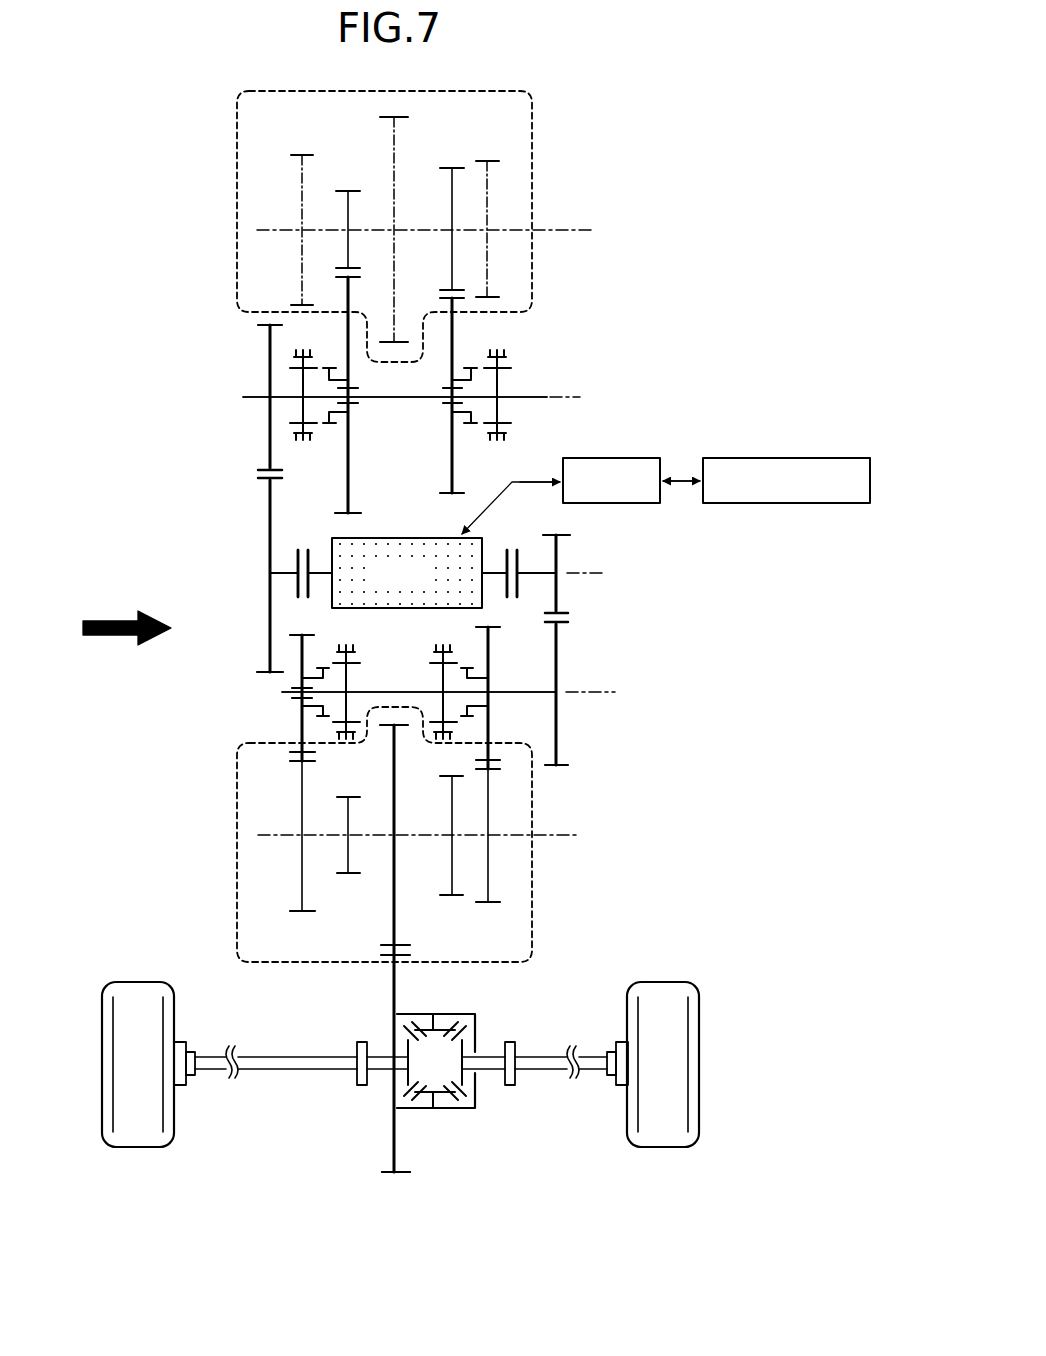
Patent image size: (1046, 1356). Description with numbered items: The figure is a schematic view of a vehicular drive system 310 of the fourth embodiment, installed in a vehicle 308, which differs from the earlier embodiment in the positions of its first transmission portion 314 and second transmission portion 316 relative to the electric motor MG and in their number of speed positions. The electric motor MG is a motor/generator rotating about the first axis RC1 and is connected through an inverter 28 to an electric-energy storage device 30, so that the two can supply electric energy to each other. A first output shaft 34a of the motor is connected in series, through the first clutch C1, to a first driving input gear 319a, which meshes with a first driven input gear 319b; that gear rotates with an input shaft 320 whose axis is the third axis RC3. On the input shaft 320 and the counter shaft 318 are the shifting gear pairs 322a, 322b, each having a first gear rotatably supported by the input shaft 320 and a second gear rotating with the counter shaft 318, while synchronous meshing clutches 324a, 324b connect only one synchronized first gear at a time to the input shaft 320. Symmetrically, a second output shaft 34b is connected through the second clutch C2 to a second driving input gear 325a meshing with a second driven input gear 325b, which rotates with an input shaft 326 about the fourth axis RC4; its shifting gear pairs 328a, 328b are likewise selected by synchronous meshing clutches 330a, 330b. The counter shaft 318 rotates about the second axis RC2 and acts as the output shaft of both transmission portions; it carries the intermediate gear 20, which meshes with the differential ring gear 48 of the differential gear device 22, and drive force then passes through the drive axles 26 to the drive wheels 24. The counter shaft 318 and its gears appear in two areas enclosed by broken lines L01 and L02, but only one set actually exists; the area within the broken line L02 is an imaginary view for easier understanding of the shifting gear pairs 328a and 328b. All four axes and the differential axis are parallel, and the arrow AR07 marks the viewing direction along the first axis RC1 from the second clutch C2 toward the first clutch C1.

The intermediate gear 20 is at (398, 119).
The differential gear device 22 is at (438, 1129).
The drive wheels 24 is at (133, 1138).
The drive axles 26 is at (268, 1068).
The inverter 28 is at (642, 461).
The electric-energy storage device 30 is at (798, 461).
The first output shaft 34a is at (492, 588).
The second output shaft 34b is at (316, 571).
The differential ring gear 48 is at (388, 1176).
The vehicle 308 is at (716, 1246).
The vehicular drive system 310 is at (654, 322).
The first transmission portion 314 is at (607, 650).
The second transmission portion 316 is at (198, 438).
The counter shaft 318 is at (442, 232).
The first driving input gear 319a is at (565, 611).
The first driven input gear 319b is at (565, 624).
The input shaft 320 is at (536, 690).
The shifting gear pair 322a is at (301, 920).
The shifting gear pair 322b is at (487, 915).
The synchronous meshing clutch 324a is at (328, 647).
The synchronous meshing clutch 324b is at (462, 647).
The second driving input gear 325a is at (263, 480).
The second driven input gear 325b is at (262, 468).
The input shaft 326 is at (400, 400).
The shifting gear pair 328a is at (453, 160).
The shifting gear pair 328b is at (346, 181).
The synchronous meshing clutch 330a is at (476, 441).
The synchronous meshing clutch 330b is at (323, 441).
The first clutch C1 is at (514, 542).
The second clutch C2 is at (298, 542).
The electric motor MG is at (407, 573).
The broken line L01 is at (535, 923).
The broken line L02 is at (535, 132).
The first axis RC1 is at (573, 571).
The second axis RC2 is at (443, 541).
The third axis RC3 is at (573, 691).
The fourth axis RC4 is at (573, 395).
The arrow AR07 is at (120, 619).